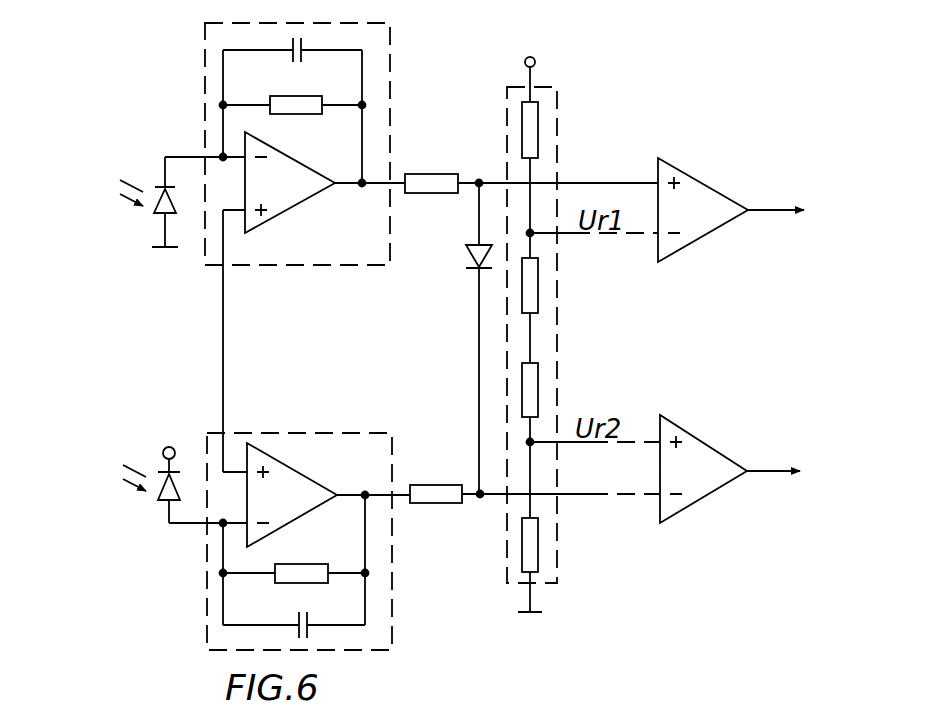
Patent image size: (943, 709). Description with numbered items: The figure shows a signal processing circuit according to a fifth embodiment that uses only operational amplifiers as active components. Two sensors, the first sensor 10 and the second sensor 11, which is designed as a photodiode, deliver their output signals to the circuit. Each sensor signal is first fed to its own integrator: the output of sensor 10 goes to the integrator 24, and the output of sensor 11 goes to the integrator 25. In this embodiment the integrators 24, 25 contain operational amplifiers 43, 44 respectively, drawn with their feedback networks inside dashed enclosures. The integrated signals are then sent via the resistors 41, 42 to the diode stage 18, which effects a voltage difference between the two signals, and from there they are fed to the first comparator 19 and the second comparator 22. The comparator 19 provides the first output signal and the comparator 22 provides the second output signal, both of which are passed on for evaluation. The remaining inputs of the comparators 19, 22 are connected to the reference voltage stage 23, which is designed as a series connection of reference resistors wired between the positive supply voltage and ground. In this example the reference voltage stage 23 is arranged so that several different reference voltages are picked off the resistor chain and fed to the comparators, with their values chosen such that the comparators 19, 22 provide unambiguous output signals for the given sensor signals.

The sensor 10 is at (153, 207).
The second sensor 11 is at (157, 501).
The diode element 18 is at (465, 262).
The first comparator 19 is at (692, 245).
The second comparator 22 is at (706, 497).
The reference voltage stage 23 is at (557, 118).
The integrator 24 is at (348, 268).
The integrator 25 is at (393, 608).
The resistor 41 is at (438, 171).
The resistor 42 is at (437, 485).
The operational amplifier 43 is at (322, 153).
The operational amplifier 44 is at (320, 482).